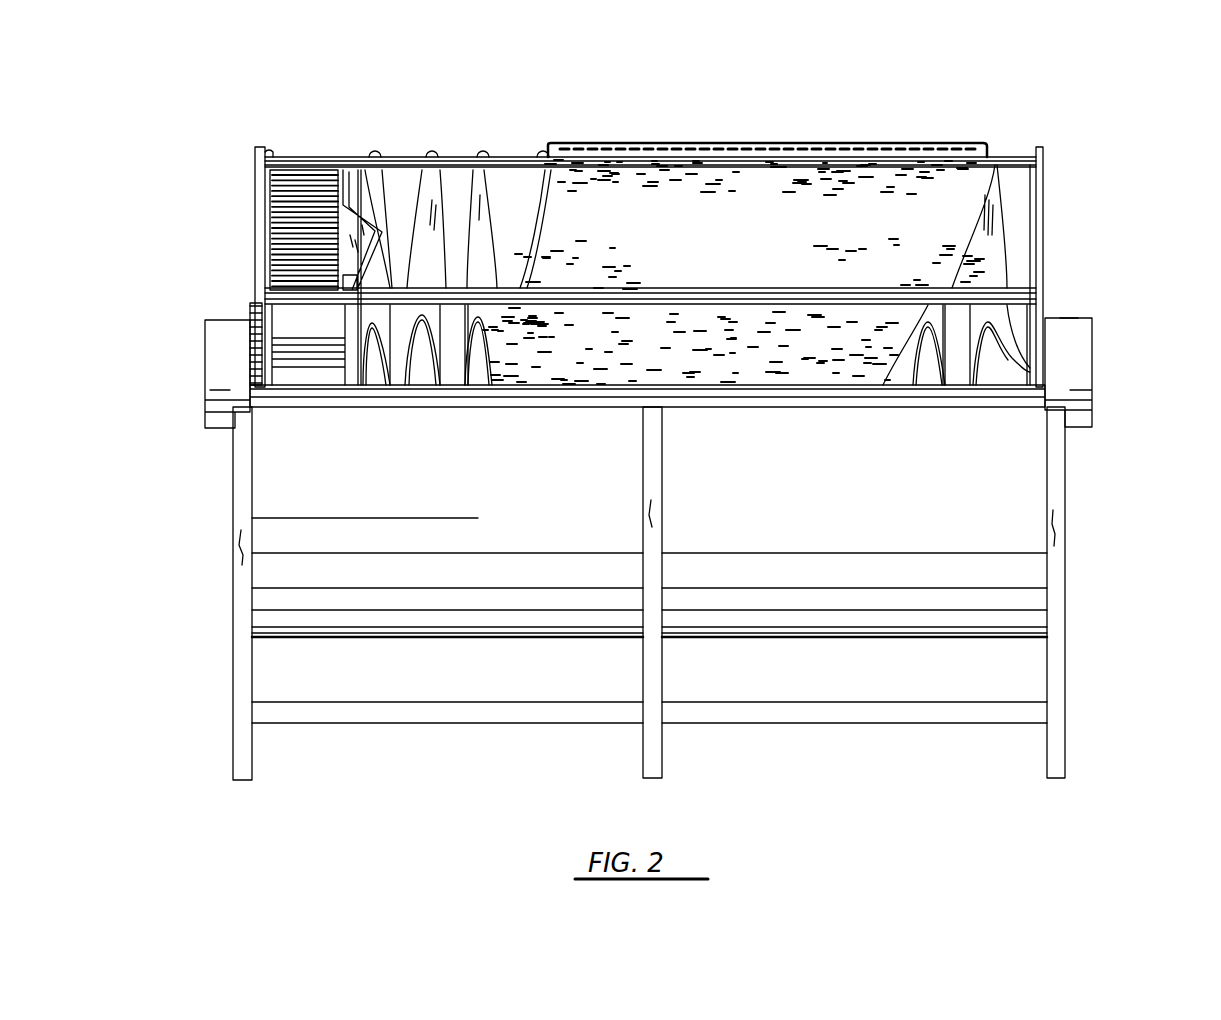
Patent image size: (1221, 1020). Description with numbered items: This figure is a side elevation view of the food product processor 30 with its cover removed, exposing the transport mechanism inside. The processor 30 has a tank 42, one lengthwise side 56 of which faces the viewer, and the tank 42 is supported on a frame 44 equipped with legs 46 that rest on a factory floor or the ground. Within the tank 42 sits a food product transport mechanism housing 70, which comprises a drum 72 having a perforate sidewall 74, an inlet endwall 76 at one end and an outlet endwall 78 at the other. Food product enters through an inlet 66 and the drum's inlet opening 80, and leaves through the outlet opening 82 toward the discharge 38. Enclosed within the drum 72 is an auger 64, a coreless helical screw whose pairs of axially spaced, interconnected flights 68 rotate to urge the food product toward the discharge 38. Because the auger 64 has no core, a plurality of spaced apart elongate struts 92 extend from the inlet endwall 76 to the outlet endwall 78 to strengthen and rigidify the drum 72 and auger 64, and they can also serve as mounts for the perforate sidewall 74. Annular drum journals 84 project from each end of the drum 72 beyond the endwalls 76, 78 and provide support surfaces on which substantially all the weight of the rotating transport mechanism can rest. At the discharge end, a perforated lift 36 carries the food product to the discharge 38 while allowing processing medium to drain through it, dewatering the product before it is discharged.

The food product processor 30 is at (1030, 96).
The lift 36 is at (305, 192).
The discharge 38 is at (192, 350).
The tank 42 is at (207, 498).
The frame 44 is at (232, 627).
The legs 46 is at (244, 748).
The lengthwise side 56 is at (1003, 487).
The auger 64 is at (1014, 239).
The inlet 66 is at (1118, 343).
The flights 68 is at (468, 166).
The food product transport mechanism housing 70 is at (724, 141).
The drum 72 is at (873, 139).
The sidewall 74 is at (608, 195).
The inlet endwall 76 is at (1043, 187).
The outlet endwall 78 is at (256, 213).
The inlet opening 80 is at (1095, 387).
The outlet opening 82 is at (196, 391).
The annular drum journal 84 is at (228, 320).
The struts 92 is at (402, 168).